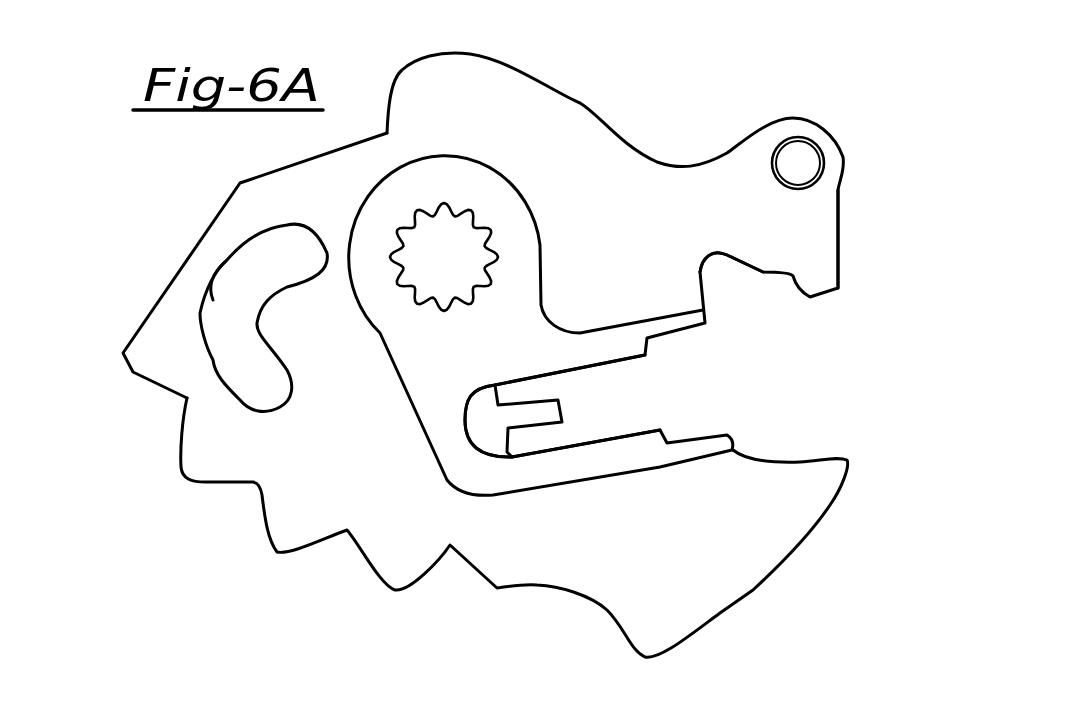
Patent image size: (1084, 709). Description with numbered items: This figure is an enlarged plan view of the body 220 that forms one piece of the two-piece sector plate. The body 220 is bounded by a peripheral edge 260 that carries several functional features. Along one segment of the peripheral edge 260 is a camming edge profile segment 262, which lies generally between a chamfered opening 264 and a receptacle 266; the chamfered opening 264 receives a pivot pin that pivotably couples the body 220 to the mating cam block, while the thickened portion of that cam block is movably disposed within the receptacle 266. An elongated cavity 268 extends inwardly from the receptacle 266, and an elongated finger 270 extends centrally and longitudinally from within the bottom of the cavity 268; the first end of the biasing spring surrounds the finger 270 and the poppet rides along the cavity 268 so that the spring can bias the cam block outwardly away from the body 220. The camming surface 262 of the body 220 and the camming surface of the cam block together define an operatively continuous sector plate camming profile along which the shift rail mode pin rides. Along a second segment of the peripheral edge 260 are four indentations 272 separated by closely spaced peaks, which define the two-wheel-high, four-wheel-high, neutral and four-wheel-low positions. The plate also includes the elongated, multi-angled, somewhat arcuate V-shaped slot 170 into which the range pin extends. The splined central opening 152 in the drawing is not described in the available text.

The sprocket / splined shaft hole 152 is at (473, 213).
The slot 170 is at (210, 293).
The body 220 is at (683, 148).
The peripheral edge 260 is at (282, 168).
The camming edge profile segment 262 is at (842, 243).
The chamfered opening 264 is at (827, 173).
The receptacle 266 is at (763, 272).
The elongated cavity 268 is at (640, 357).
The elongated finger 270 is at (560, 400).
The indentations 272 is at (257, 483).